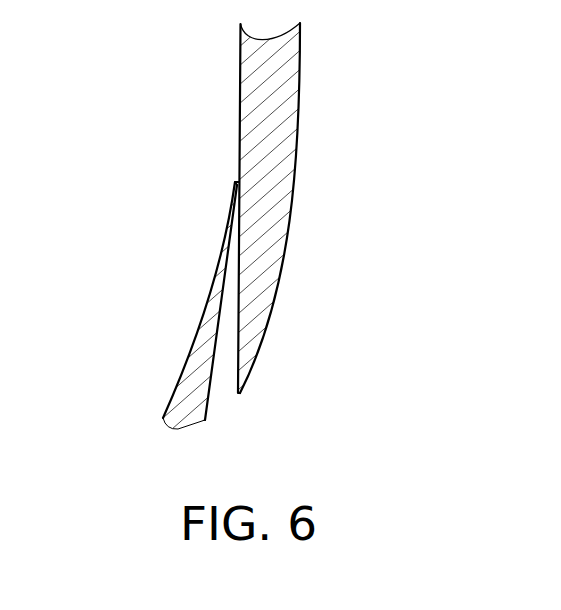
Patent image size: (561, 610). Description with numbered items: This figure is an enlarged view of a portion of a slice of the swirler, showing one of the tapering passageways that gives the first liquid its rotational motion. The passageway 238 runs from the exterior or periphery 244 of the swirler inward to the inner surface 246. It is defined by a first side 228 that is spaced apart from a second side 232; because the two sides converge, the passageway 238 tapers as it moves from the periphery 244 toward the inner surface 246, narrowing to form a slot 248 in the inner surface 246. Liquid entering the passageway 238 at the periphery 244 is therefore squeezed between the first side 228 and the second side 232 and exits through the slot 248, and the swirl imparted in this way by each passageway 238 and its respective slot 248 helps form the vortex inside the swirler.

The first side 228 is at (209, 257).
The second side 232 is at (255, 257).
The passageway 238 is at (222, 370).
The periphery 244 is at (265, 322).
The inner surface 246 is at (212, 290).
The slot 248 is at (237, 183).